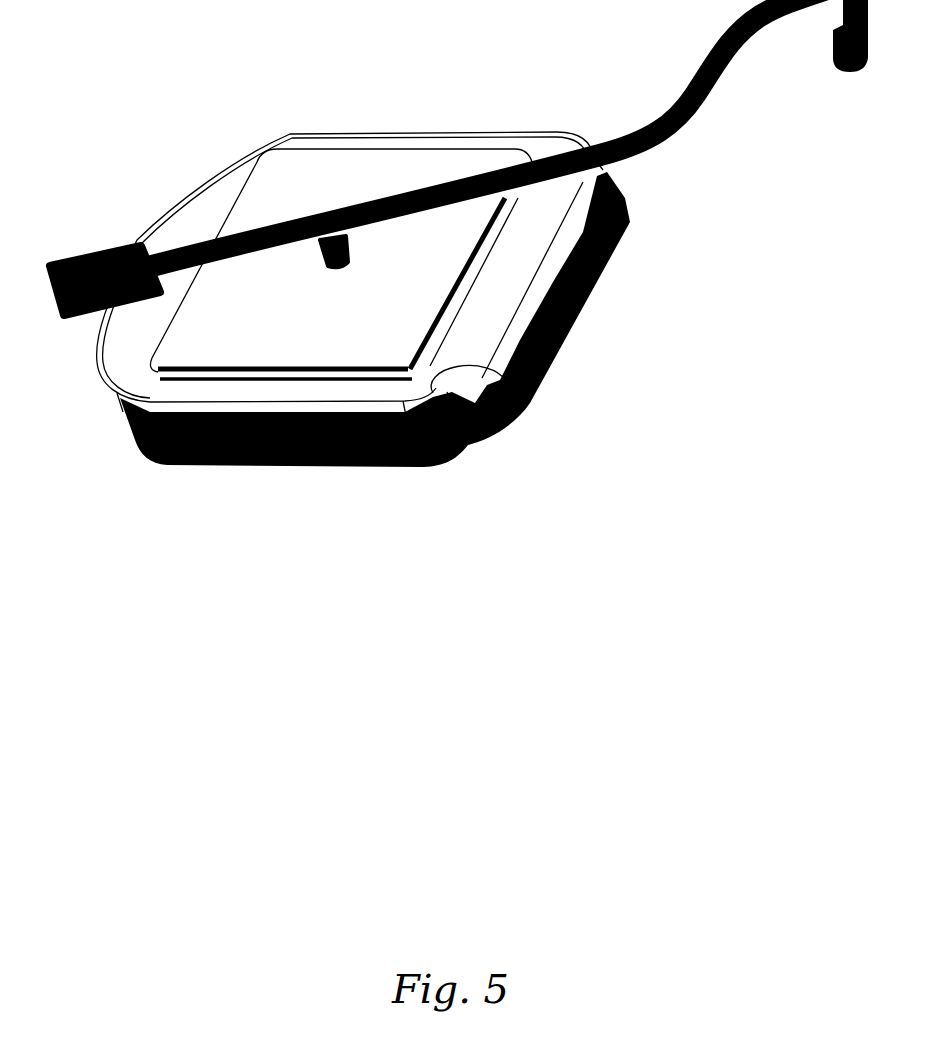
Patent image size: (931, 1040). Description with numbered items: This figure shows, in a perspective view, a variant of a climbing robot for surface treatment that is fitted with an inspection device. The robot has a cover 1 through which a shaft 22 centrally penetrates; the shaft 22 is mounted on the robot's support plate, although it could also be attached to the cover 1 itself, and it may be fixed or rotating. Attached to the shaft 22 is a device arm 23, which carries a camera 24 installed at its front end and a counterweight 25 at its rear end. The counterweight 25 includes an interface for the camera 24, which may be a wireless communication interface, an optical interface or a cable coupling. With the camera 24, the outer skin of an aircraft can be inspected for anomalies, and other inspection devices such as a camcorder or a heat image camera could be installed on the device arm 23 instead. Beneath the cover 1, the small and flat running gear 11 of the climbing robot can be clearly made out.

The cover 1 is at (310, 138).
The running gear 11 is at (445, 340).
The shaft 22 is at (323, 268).
The device arm 23 is at (687, 140).
The camera 24 is at (840, 72).
The counterweight 25 is at (68, 322).